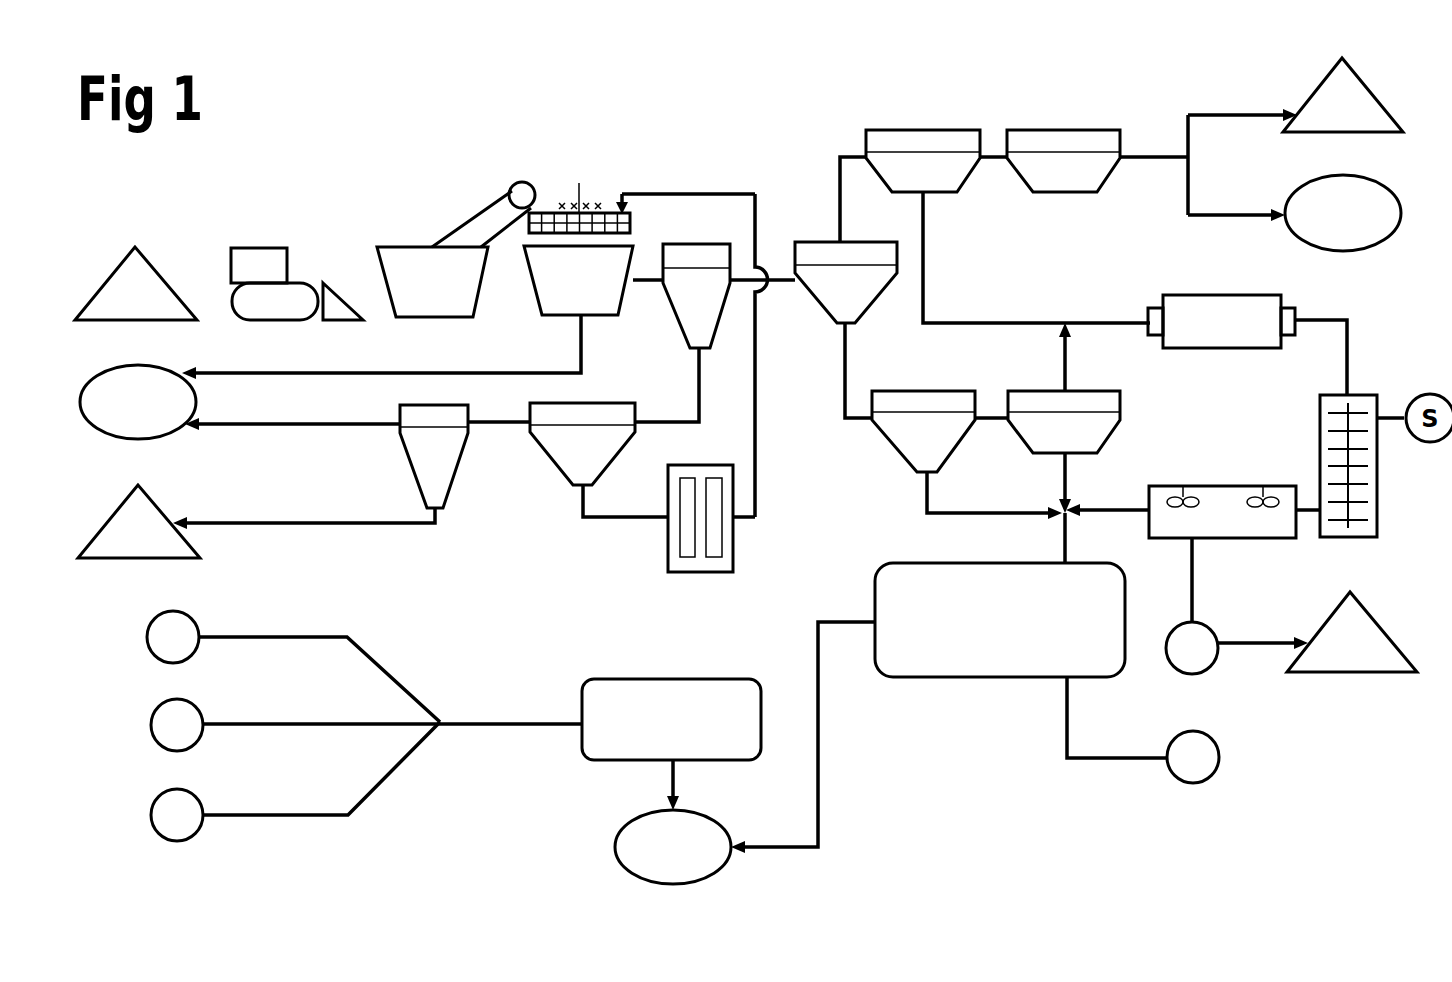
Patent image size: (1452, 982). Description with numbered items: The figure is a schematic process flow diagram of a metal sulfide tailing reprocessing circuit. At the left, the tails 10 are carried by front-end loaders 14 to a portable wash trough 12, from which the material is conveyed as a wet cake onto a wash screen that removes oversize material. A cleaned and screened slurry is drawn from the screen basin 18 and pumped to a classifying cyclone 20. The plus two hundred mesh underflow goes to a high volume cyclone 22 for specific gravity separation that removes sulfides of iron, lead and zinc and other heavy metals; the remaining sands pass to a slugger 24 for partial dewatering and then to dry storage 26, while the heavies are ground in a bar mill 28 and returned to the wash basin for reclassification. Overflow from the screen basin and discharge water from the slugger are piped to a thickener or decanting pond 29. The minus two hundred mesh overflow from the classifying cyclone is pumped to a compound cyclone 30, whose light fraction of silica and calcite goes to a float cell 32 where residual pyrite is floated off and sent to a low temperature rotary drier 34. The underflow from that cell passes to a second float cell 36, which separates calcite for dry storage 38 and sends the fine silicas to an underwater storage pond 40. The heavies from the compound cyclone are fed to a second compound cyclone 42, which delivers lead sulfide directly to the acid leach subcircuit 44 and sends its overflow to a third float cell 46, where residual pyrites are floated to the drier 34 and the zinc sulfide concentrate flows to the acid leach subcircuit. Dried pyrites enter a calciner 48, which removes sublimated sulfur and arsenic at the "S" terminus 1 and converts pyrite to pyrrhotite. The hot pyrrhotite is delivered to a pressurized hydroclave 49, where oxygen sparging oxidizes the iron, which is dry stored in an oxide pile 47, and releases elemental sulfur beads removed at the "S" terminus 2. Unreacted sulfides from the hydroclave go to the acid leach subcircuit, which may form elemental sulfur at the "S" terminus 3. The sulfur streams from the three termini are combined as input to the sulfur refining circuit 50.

The "S" terminus 1 is at (160, 637).
The "S" terminus 2 is at (681, 686).
The "S" terminus 3 is at (682, 786).
The tails 10 is at (136, 283).
The portable wash trough 12 is at (456, 249).
The front-end loaders 14 is at (297, 284).
The screen basin 18 is at (578, 249).
The classifying cyclone 20 is at (696, 296).
The high volume cyclone 22 is at (582, 444).
The slugger 24 is at (434, 456).
The dry storage 26 is at (139, 521).
The bar mill 28 is at (702, 506).
The thickener or decanting pond 29 is at (138, 402).
The compound cyclone 30 is at (846, 282).
The float cell 32 is at (923, 161).
The low temperature rotary drier 34 is at (1221, 321).
The second float cell 36 is at (1063, 161).
The dry storage 38 is at (1343, 95).
The pond 40 is at (1343, 213).
The second compound cyclone 42 is at (923, 431).
The acid leach subcircuit 44 is at (1000, 620).
The third float cell 46 is at (1064, 422).
The oxide pile 47 is at (1352, 632).
The calciner 48 is at (1349, 451).
The pressurized hydroclave 49 is at (1222, 512).
The sulfur refining circuit 50 is at (671, 719).